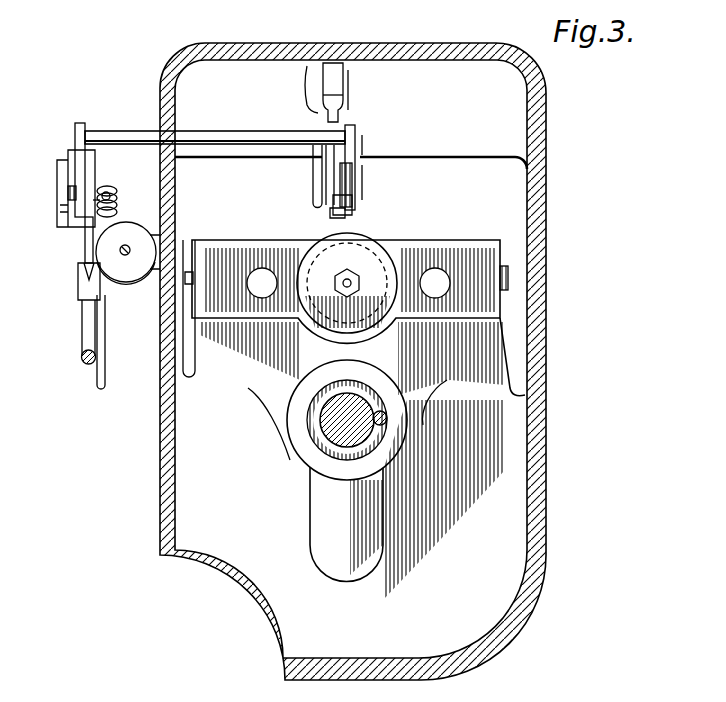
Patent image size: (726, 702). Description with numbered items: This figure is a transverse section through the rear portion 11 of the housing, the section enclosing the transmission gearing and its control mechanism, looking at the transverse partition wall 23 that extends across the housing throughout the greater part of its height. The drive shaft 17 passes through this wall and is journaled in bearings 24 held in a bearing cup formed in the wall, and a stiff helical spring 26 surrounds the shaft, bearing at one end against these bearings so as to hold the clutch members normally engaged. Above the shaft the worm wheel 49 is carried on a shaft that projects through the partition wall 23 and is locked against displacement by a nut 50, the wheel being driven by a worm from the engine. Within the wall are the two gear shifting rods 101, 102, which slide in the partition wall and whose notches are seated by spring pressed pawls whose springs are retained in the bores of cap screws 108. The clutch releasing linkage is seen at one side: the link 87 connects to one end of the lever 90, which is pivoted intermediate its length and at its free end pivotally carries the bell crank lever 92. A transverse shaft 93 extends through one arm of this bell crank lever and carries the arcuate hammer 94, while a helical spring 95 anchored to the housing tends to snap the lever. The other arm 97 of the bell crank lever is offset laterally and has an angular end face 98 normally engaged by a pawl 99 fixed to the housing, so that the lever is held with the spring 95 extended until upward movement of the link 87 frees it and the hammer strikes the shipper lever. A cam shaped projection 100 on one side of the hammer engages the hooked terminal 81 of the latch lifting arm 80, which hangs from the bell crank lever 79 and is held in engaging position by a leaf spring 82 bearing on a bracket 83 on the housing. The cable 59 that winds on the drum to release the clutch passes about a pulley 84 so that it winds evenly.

The rear portion of housing 11 is at (533, 305).
The drive shaft 17 is at (335, 440).
The transverse partition wall 23 is at (505, 551).
The bearings 24 is at (292, 418).
The helical spring 26 is at (318, 438).
The worm wheel 49 is at (381, 250).
The nut 50 is at (347, 276).
The cable 59 is at (100, 373).
The bell crank lever 79 is at (336, 84).
The latch lifting arm 80 is at (352, 178).
The hooked terminal 81 is at (352, 200).
The leaf spring 82 is at (325, 168).
The bracket 83 is at (316, 182).
The pulley 84 is at (127, 272).
The link 87 is at (84, 326).
The lever 90 is at (87, 238).
The bell crank lever 92 is at (77, 136).
The shaft 93 is at (213, 135).
The arcuate hammer 94 is at (352, 131).
The helical spring 95 is at (113, 198).
The other arm of bell crank lever 97 is at (67, 165).
The angular end face 98 is at (77, 191).
The pawl 99 is at (68, 208).
The cam shaped projection 100 is at (335, 209).
The gear shifting rod 101 is at (440, 281).
The gear shifting rod 102 is at (267, 280).
The cap screws 108 is at (505, 266).